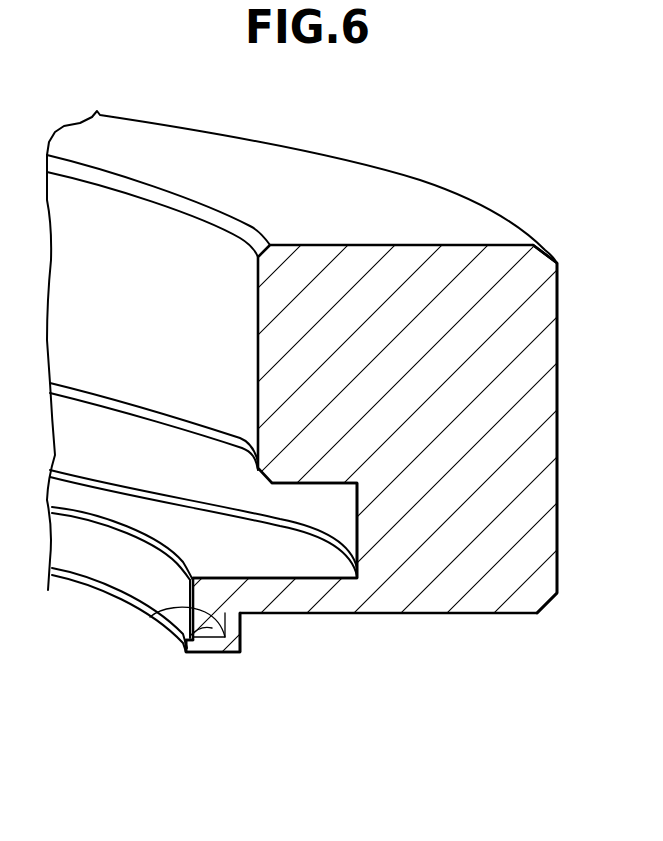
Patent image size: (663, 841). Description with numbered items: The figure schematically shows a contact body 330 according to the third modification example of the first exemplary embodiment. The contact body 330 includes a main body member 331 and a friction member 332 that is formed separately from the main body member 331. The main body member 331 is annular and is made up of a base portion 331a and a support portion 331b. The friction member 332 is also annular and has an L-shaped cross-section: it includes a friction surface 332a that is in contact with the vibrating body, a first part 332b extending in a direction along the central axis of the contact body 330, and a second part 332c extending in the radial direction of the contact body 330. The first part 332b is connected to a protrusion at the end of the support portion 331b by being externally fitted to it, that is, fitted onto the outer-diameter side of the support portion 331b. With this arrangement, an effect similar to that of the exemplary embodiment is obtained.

The contact body 330 is at (450, 753).
The main body member 331 is at (500, 703).
The base portion 331a is at (522, 600).
The support portion 331b is at (270, 595).
The friction member 332 is at (228, 652).
The friction surface 332a is at (210, 652).
The first part 332b is at (150, 617).
The second part 332c is at (180, 632).